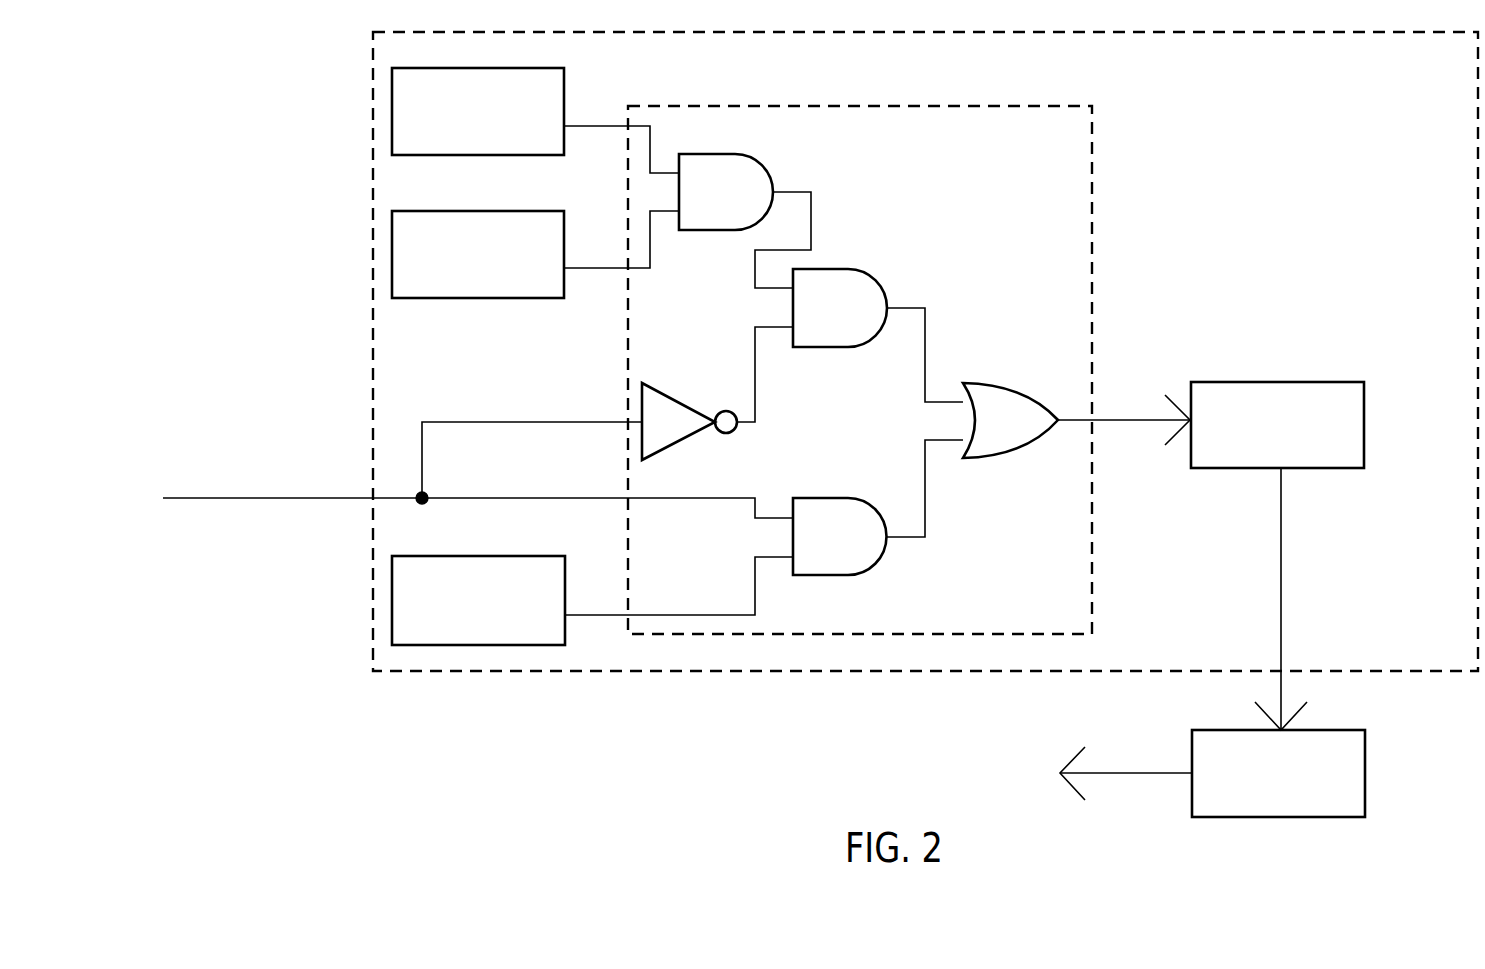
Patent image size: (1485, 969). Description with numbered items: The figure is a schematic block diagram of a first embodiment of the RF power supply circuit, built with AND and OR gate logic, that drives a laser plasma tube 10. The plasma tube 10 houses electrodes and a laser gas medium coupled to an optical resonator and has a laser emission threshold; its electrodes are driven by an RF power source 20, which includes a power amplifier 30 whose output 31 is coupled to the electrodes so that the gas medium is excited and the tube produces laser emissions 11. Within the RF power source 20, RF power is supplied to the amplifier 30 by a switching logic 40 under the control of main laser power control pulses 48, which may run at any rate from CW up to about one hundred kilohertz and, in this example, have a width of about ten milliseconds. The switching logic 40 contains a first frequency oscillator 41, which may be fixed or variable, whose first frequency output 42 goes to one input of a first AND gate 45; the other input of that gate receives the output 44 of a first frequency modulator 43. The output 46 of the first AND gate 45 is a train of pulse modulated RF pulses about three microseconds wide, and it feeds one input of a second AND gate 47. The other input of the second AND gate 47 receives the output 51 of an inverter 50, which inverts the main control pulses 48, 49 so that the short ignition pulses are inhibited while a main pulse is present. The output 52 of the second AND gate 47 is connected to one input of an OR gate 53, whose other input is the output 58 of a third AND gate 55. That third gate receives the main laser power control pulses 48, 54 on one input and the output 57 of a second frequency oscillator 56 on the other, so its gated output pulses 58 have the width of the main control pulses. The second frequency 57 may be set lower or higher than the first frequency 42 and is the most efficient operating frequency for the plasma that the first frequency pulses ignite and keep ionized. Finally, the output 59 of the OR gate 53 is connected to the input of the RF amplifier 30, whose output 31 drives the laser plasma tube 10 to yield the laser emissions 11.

The laser plasma tube 10 is at (1338, 728).
The laser emissions 11 is at (1110, 772).
The RF power source 20 is at (1190, 32).
The RF power amplifier 30 is at (1332, 382).
The output of the power amplifier 31 is at (1281, 523).
The switching logic 40 is at (1092, 240).
The first frequency oscillator 41 is at (470, 68).
The first frequency output 42 is at (608, 126).
The first frequency modulator 43 is at (512, 211).
The output of the first frequency modulator 44 is at (578, 268).
The first AND gate 45 is at (735, 154).
The output of the first AND gate 46 is at (795, 192).
The second AND gate 47 is at (850, 269).
The main laser power control pulses 48 is at (267, 498).
The main laser power control pulses input to inverter 49 is at (508, 422).
The inverter 50 is at (655, 383).
The output of the inverter 51 is at (755, 400).
The output of the second AND gate 52 is at (907, 305).
The OR gate 53 is at (995, 383).
The main laser power control pulses input to third AND gate 54 is at (660, 498).
The third AND gate 55 is at (813, 498).
The second frequency oscillator 56 is at (500, 556).
The output of the second frequency oscillator 57 is at (650, 613).
The output of the third AND gate 58 is at (930, 535).
The output of the OR gate 59 is at (1070, 420).